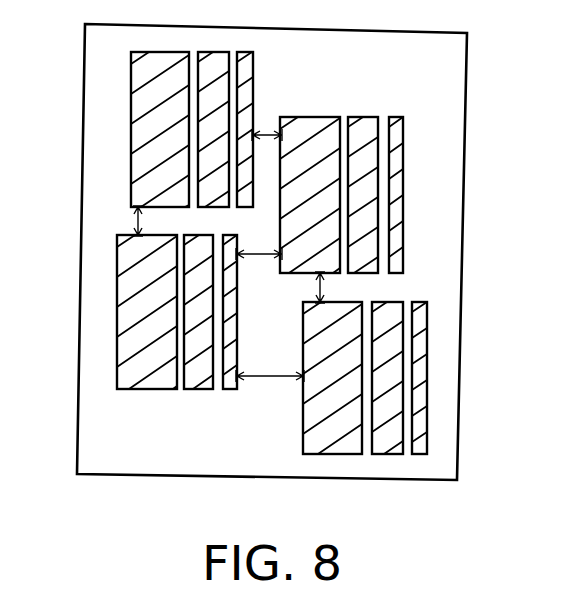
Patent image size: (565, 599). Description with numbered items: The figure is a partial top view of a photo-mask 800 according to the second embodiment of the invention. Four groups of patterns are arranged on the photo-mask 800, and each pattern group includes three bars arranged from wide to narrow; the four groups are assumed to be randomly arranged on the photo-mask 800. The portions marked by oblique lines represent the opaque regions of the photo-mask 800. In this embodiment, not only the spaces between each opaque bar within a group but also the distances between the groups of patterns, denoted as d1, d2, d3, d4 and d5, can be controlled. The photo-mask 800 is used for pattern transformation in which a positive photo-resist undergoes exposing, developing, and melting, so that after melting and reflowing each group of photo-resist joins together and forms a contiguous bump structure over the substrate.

The photo-mask 800 is at (537, 521).
The distance between pattern groups d1 is at (138, 222).
The distance between pattern groups d2 is at (258, 255).
The distance between pattern groups d3 is at (320, 288).
The distance between pattern groups d4 is at (268, 135).
The distance between pattern groups d5 is at (255, 377).